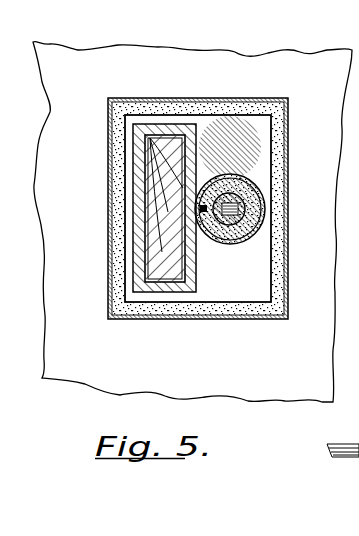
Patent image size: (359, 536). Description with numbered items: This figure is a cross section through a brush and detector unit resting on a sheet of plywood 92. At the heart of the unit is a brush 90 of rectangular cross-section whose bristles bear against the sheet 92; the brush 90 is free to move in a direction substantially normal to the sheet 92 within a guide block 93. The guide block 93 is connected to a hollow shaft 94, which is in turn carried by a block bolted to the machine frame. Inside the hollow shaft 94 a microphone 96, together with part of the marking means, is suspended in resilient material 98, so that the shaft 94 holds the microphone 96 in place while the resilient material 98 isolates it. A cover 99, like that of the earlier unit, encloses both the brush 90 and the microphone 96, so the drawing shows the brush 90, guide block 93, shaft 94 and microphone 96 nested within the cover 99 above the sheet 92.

The brush 90 is at (145, 217).
The sheet of plywood 92 is at (282, 392).
The guide block 93 is at (193, 293).
The hollow shaft 94 is at (260, 230).
The microphone 96 is at (234, 194).
The resilient material 98 is at (251, 210).
The cover 99 is at (289, 310).